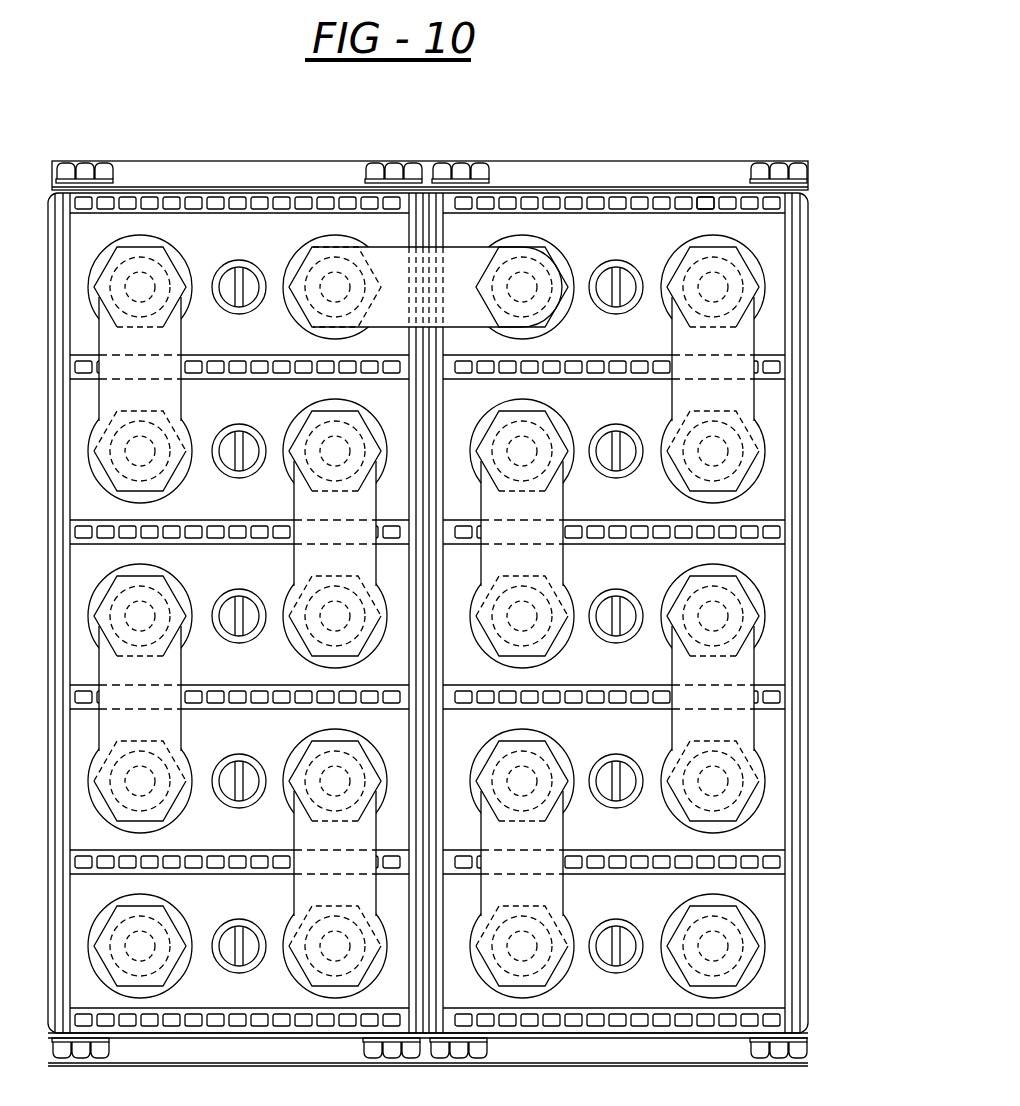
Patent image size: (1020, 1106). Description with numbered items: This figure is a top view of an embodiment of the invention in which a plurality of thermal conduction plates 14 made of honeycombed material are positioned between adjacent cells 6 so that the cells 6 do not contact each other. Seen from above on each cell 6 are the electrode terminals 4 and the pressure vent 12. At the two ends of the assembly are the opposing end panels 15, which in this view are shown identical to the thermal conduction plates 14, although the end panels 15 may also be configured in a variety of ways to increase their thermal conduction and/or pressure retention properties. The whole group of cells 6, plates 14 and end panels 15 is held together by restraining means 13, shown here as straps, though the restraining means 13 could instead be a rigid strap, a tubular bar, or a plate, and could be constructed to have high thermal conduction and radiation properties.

The electrode terminal 4 is at (722, 283).
The cell 6 is at (775, 485).
The pressure vent 12 is at (627, 603).
The restraining means 13 is at (628, 172).
The thermal conduction plate 14 is at (760, 526).
The end panel 15 is at (710, 203).